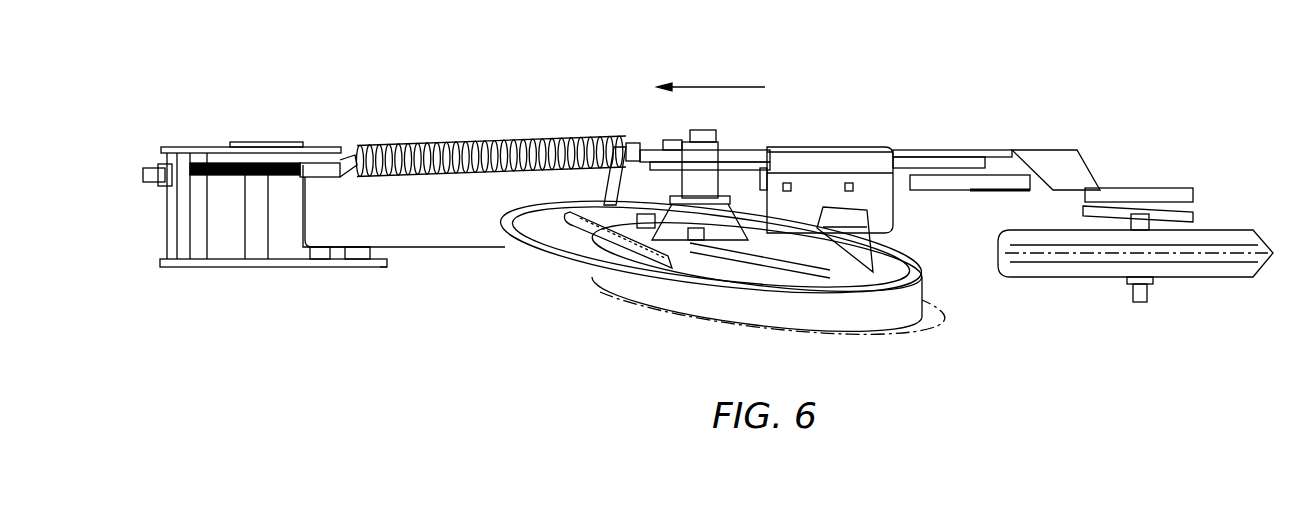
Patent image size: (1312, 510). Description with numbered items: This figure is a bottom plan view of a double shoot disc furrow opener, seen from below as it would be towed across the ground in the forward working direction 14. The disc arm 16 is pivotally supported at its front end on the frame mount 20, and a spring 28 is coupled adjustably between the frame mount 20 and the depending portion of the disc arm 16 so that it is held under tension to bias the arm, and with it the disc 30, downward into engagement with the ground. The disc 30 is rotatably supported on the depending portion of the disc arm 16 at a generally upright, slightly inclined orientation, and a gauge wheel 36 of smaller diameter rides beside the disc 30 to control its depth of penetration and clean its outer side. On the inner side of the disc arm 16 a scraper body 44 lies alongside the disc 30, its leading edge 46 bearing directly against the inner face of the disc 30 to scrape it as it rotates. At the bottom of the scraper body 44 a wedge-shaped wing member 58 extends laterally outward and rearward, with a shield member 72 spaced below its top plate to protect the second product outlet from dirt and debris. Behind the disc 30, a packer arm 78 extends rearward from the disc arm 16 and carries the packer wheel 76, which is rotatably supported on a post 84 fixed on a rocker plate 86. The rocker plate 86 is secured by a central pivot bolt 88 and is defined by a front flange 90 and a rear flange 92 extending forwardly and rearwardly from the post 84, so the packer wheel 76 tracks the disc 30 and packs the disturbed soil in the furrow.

The forward working direction 14 is at (717, 87).
The disc arm 16 is at (456, 218).
The frame mount 20 is at (287, 263).
The spring 28 is at (470, 137).
The disc 30 is at (565, 245).
The gauge wheel 36 is at (870, 318).
The scraper body 44 is at (682, 252).
The leading edge 46 is at (620, 247).
The wing member 58 is at (793, 250).
The shield member 72 is at (838, 260).
The packer wheel 76 is at (1200, 258).
The packer arm 78 is at (978, 148).
The post 84 is at (1140, 300).
The rocker plate 86 is at (1210, 222).
The central pivot bolt 88 is at (1140, 186).
The front flange 90 is at (1130, 222).
The rear flange 92 is at (1195, 208).